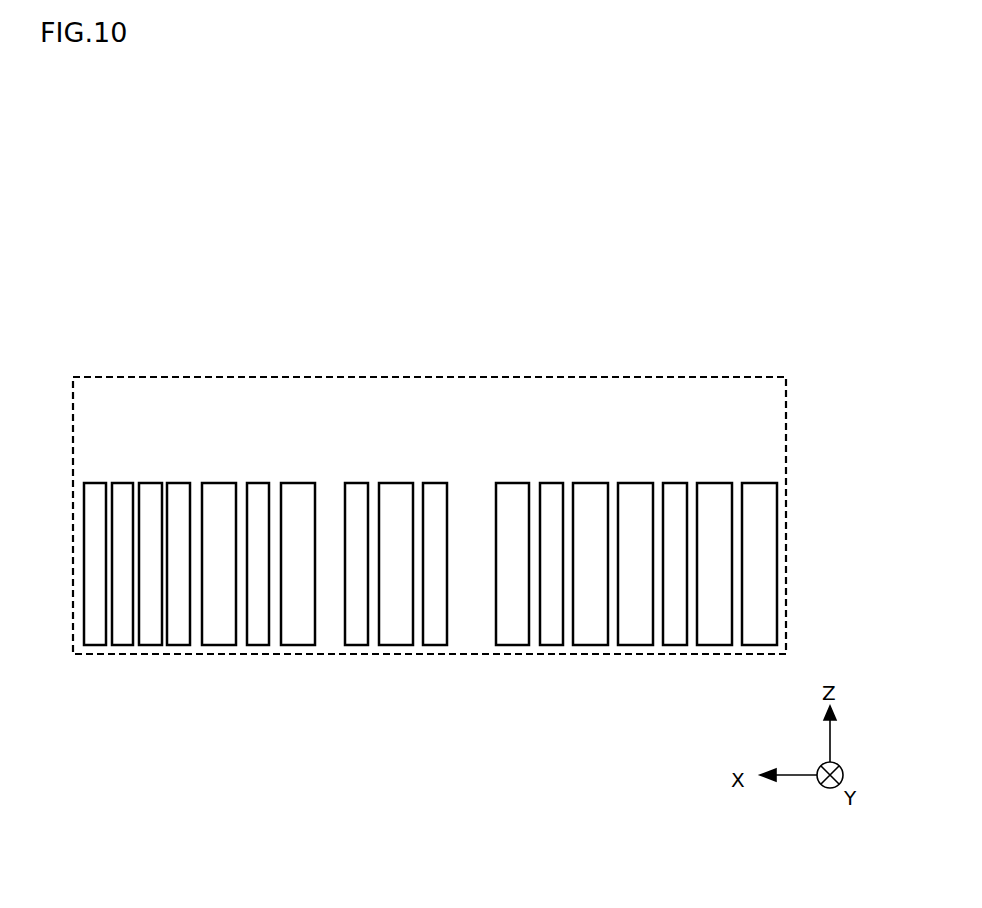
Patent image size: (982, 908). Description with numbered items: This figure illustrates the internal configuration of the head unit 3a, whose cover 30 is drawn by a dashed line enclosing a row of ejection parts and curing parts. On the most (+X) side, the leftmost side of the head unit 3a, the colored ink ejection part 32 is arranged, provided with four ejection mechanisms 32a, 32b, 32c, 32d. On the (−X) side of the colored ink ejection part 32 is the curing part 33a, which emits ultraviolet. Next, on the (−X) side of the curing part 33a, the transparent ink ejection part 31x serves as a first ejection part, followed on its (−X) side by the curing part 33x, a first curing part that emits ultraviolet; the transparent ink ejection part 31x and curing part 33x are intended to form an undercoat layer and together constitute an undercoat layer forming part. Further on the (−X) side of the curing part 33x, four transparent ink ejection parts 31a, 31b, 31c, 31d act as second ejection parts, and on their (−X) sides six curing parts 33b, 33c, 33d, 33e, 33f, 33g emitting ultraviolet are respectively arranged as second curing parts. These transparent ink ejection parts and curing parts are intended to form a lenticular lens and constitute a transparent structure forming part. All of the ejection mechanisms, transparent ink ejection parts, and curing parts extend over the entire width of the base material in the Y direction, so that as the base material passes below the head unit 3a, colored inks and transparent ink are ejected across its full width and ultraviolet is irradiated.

The head unit 3a is at (113, 348).
The cover 30 is at (786, 457).
The colored ink ejection part 32 is at (130, 627).
The ejection mechanism 32a is at (95, 645).
The ejection mechanism 32b is at (122, 645).
The ejection mechanism 32c is at (150, 645).
The ejection mechanism 32d is at (178, 645).
The curing part 33a is at (218, 645).
The transparent ink ejection part 31x is at (258, 645).
The curing part 33x is at (298, 645).
The transparent ink ejection part 31a is at (357, 645).
The curing part 33b is at (397, 645).
The transparent ink ejection part 31b is at (435, 645).
The curing part 33c is at (515, 645).
The transparent ink ejection part 31c is at (552, 645).
The curing part 33d is at (590, 645).
The curing part 33e is at (635, 645).
The transparent ink ejection part 31d is at (675, 645).
The curing part 33f is at (713, 645).
The curing part 33g is at (758, 645).